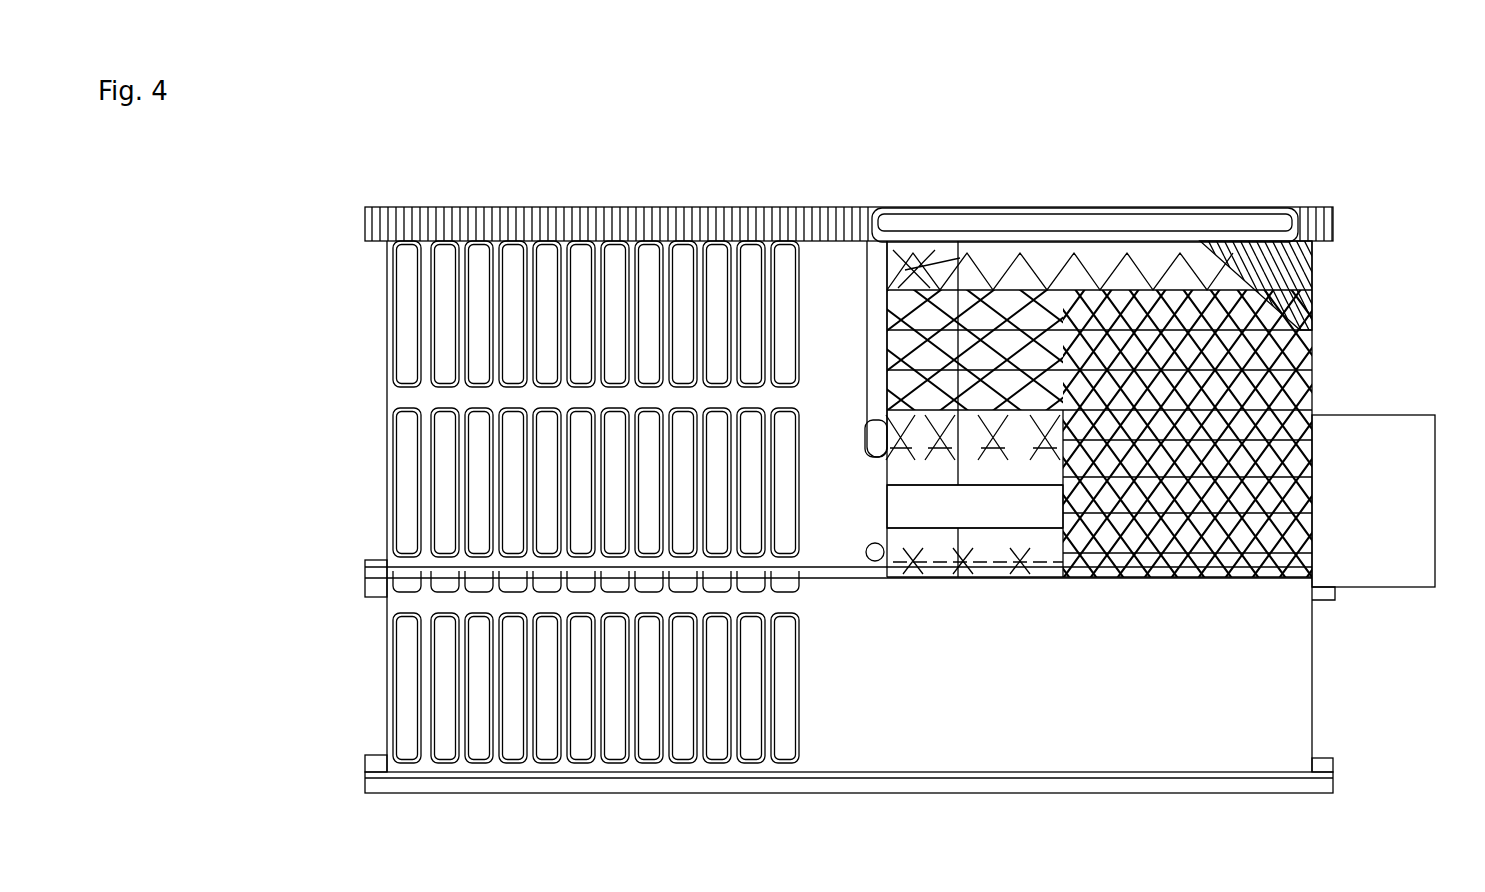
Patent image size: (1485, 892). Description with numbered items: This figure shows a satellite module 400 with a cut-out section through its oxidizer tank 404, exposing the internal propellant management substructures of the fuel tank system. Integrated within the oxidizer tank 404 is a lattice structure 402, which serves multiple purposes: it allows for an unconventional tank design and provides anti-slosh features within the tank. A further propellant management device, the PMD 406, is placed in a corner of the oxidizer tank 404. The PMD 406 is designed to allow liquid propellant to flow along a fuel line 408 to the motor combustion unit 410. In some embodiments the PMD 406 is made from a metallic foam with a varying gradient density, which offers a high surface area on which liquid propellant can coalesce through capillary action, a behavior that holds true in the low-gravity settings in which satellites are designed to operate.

The satellite module 400 is at (245, 228).
The lattice structure 402 is at (1057, 313).
The oxidizer tank 404 is at (1308, 347).
The PMD 406 is at (1265, 260).
The fuel line 408 is at (1125, 230).
The motor combustion unit 410 is at (902, 497).